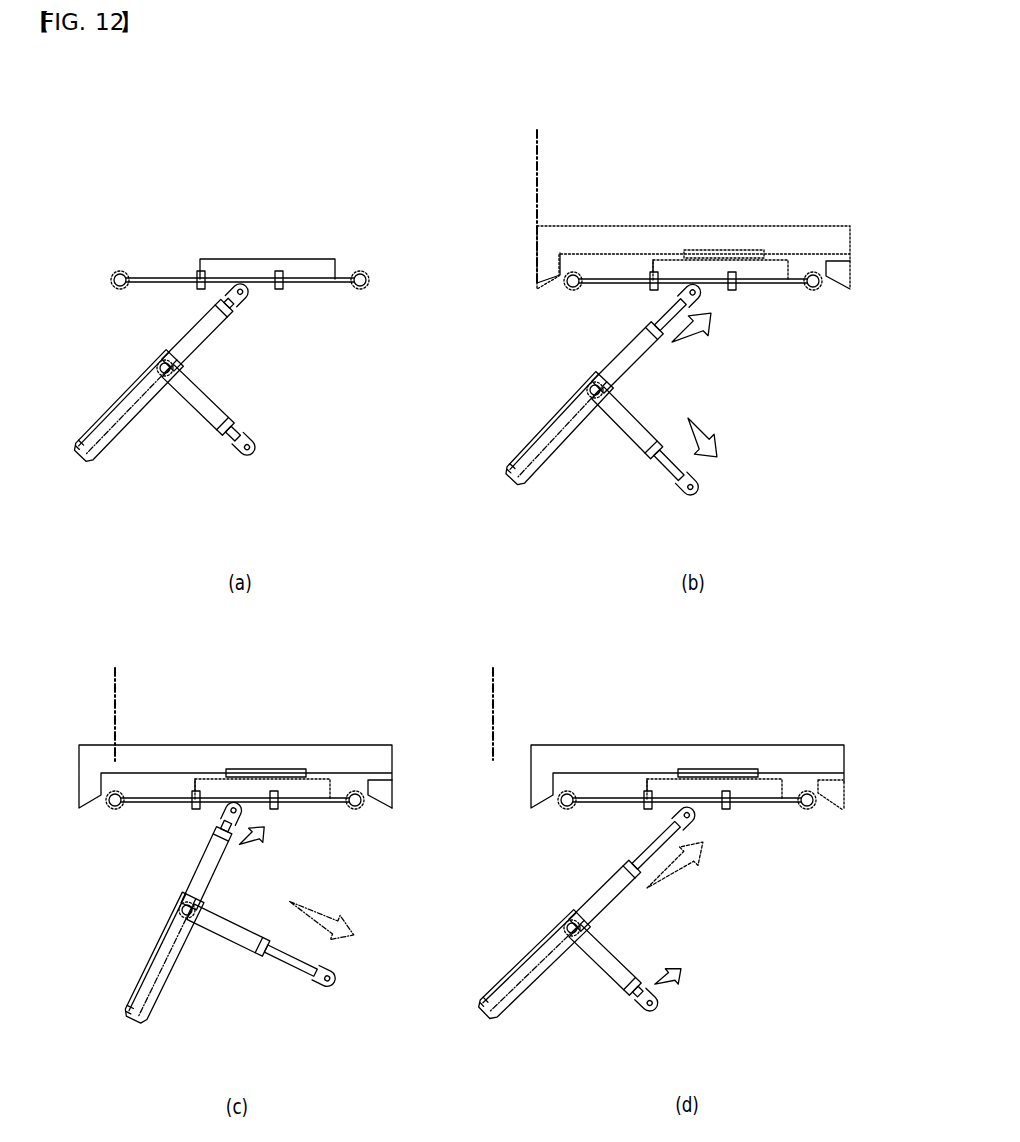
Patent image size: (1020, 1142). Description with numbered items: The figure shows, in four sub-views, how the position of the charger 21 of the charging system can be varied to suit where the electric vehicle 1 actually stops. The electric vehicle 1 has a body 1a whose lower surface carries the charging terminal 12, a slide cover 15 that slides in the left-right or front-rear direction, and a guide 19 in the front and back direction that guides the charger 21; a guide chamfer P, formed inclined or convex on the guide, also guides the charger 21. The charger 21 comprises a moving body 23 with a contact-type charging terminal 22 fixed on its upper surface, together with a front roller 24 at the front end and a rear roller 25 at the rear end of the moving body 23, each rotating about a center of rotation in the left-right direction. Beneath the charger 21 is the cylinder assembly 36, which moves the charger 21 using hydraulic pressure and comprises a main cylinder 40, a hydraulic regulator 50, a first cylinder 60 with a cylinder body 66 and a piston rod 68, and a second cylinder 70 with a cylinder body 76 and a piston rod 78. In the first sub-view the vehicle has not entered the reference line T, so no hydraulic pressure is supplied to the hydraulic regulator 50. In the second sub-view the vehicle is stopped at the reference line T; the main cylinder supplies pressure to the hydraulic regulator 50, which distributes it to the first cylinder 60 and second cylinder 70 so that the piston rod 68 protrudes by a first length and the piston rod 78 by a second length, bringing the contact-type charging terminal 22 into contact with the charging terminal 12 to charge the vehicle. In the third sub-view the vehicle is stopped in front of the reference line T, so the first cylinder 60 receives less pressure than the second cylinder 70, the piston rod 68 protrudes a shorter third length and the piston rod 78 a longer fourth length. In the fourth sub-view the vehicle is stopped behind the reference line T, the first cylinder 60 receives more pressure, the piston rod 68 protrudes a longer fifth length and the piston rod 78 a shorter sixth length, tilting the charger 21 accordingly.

The electric vehicle 1 is at (464, 487).
The body 1a is at (464, 487).
The charging terminal 12 is at (495, 471).
The slide cover 15 is at (617, 566).
The guide in the front and back direction 19 is at (290, 523).
The charger 21 is at (491, 473).
The contact-type charging terminal 22 is at (490, 490).
The moving body 23 is at (464, 486).
The front roller 24 is at (344, 490).
The rear roller 25 is at (611, 507).
The cylinder assembly 36 is at (547, 689).
The main cylinder 40 is at (338, 687).
The hydraulic regulator 50 is at (417, 644).
The first cylinder 60 is at (395, 605).
The cylinder body 66 is at (389, 615).
The piston rod 68 is at (410, 576).
The second cylinder 70 is at (427, 733).
The cylinder body 76 is at (408, 717).
The piston rod 78 is at (455, 745).
The guide chamfer P is at (435, 579).
The reference line T is at (326, 435).